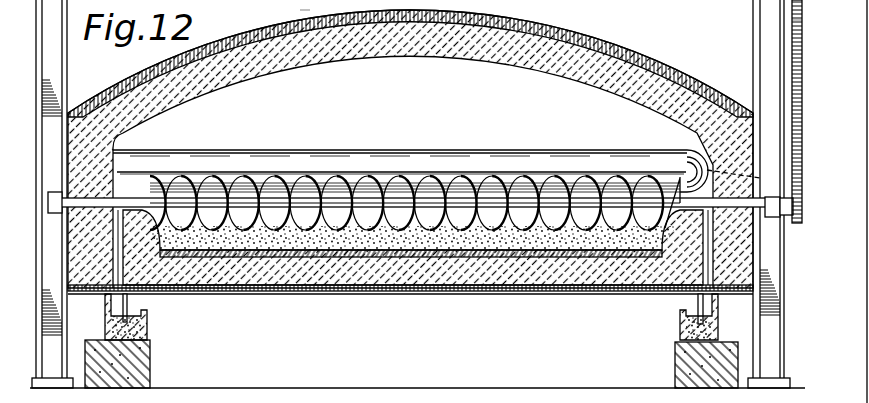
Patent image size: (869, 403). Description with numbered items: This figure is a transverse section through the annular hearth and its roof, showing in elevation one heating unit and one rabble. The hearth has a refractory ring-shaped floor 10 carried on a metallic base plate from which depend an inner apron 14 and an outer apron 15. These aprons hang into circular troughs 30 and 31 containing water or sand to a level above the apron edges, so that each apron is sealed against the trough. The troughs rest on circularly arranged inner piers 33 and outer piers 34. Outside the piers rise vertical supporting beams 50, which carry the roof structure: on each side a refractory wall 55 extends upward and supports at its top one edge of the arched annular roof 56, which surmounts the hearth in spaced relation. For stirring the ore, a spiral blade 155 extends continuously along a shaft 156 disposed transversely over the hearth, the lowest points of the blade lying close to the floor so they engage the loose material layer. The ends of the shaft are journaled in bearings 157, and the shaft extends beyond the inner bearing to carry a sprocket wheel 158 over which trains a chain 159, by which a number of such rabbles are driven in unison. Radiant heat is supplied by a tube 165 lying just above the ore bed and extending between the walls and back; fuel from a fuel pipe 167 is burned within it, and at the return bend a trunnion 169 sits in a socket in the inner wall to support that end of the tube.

The ring-shaped floor 10 is at (360, 290).
The inner apron 14 is at (698, 303).
The outer apron 15 is at (127, 300).
The inner circular trough 30 is at (680, 330).
The outer circular trough 31 is at (147, 329).
The inner piers 33 is at (675, 362).
The outer piers 34 is at (150, 359).
The supporting beams 50 is at (57, 79).
The wall 55 is at (410, 300).
The arched annular roof 56 is at (309, 8).
The spiral blades 155 is at (333, 178).
The shaft 156 is at (430, 202).
The bearings 157 is at (53, 192).
The sprocket wheel 158 is at (800, 225).
The chain 159 is at (792, 24).
The tubes 165 is at (550, 153).
The fuel pipe 167 is at (466, 6).
The trunnion 169 is at (746, 179).